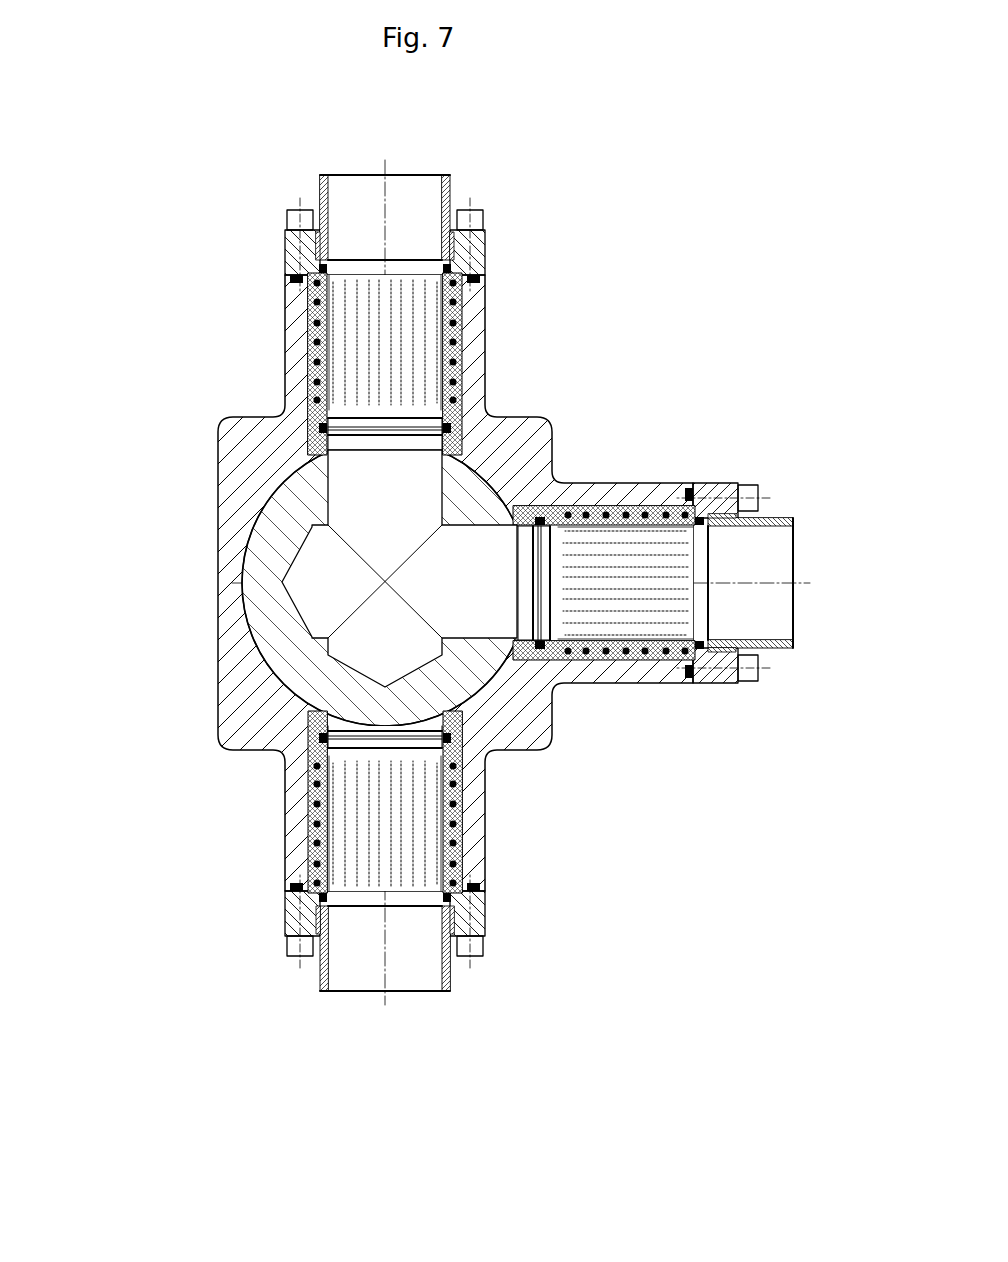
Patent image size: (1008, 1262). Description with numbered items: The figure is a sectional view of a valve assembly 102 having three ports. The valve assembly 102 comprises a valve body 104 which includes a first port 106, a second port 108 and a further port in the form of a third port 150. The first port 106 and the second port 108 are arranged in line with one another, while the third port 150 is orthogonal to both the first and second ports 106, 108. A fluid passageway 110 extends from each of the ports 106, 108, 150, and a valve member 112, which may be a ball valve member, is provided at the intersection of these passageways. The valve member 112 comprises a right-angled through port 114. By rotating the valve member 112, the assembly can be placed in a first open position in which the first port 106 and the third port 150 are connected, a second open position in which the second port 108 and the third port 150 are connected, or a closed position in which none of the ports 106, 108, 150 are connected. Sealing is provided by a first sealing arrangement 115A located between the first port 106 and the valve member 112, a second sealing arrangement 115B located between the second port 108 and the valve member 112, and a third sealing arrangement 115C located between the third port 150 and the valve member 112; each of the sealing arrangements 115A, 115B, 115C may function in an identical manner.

The valve assembly 102 is at (464, 600).
The valve body 104 is at (257, 695).
The first port 106 is at (453, 178).
The second port 108 is at (342, 977).
The fluid passageway 110 is at (413, 370).
The valve member 112 is at (270, 542).
The right-angled through port 114 is at (457, 618).
The first sealing arrangement 115A is at (301, 401).
The second sealing arrangement 115B is at (294, 751).
The third sealing arrangement 115C is at (575, 484).
The third port 150 is at (783, 522).